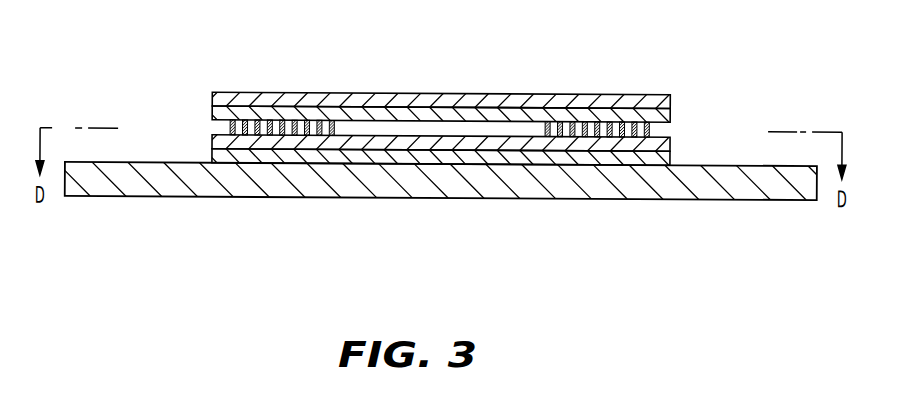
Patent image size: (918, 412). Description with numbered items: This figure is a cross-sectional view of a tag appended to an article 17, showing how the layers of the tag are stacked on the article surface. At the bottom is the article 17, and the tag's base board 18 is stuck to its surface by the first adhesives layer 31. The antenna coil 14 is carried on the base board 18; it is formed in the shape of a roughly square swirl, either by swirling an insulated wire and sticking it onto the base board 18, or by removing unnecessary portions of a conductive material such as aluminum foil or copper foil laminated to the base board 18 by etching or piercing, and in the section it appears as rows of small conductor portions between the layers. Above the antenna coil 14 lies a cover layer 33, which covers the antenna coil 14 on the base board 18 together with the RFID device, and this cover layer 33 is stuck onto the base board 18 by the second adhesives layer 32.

The antenna coil 14 is at (662, 127).
The article 17 is at (443, 216).
The base board 18 is at (212, 138).
The first adhesives layer 31 is at (672, 155).
The second adhesives layer 32 is at (212, 108).
The cover layer 33 is at (270, 93).